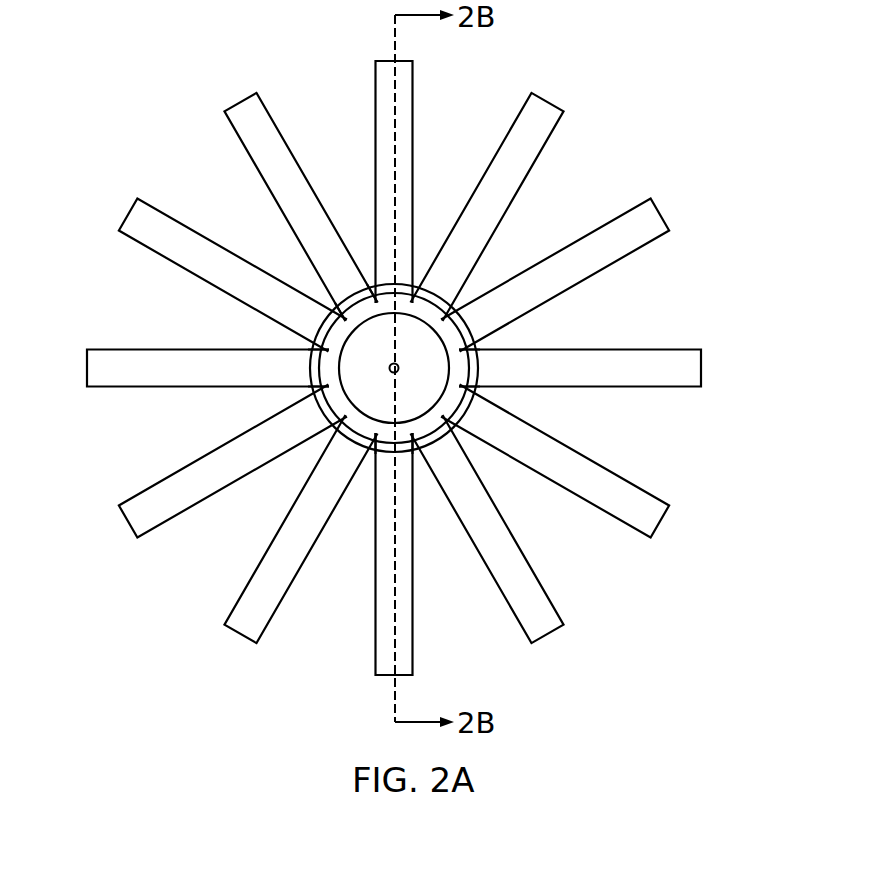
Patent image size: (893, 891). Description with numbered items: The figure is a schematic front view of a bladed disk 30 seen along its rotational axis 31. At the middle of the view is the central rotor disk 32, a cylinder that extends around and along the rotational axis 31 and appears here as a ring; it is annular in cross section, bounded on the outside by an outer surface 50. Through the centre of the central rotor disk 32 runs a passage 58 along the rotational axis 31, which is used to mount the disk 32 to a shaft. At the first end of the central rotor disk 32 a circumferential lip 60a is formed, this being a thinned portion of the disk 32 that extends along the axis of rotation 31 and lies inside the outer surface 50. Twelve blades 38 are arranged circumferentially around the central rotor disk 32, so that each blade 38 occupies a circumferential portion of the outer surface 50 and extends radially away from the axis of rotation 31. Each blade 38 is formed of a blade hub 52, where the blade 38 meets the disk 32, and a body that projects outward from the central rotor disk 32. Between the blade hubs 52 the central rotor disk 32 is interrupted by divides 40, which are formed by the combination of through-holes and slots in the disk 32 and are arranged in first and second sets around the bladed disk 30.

The bladed disk 30 is at (200, 87).
The blade 38 is at (140, 217).
The divide 40 is at (335, 302).
The central rotor disk 32 is at (312, 352).
The blade hub 52 is at (312, 370).
The rotational axis 31 is at (399, 366).
The circumferential lip 60a is at (430, 297).
The outer surface 50 is at (458, 384).
The passage 58 is at (430, 388).